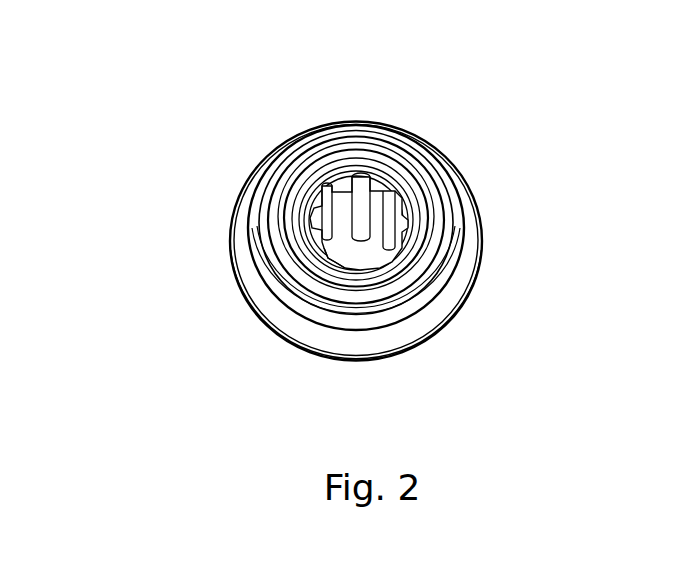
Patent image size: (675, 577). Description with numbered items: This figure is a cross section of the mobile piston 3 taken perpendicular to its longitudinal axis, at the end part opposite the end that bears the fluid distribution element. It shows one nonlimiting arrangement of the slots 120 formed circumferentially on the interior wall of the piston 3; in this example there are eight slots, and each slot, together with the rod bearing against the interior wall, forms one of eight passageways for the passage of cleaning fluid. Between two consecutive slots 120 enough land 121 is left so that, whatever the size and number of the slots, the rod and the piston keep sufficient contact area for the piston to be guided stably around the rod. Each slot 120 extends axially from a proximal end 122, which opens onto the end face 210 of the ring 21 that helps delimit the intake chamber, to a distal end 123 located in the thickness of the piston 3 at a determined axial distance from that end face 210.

The mobile piston 3 is at (341, 211).
The ring 21 is at (480, 247).
The end face 210 is at (382, 137).
The slots 120 is at (297, 241).
The land 121 is at (343, 190).
The proximal end 122 is at (322, 186).
The distal end 123 is at (318, 256).